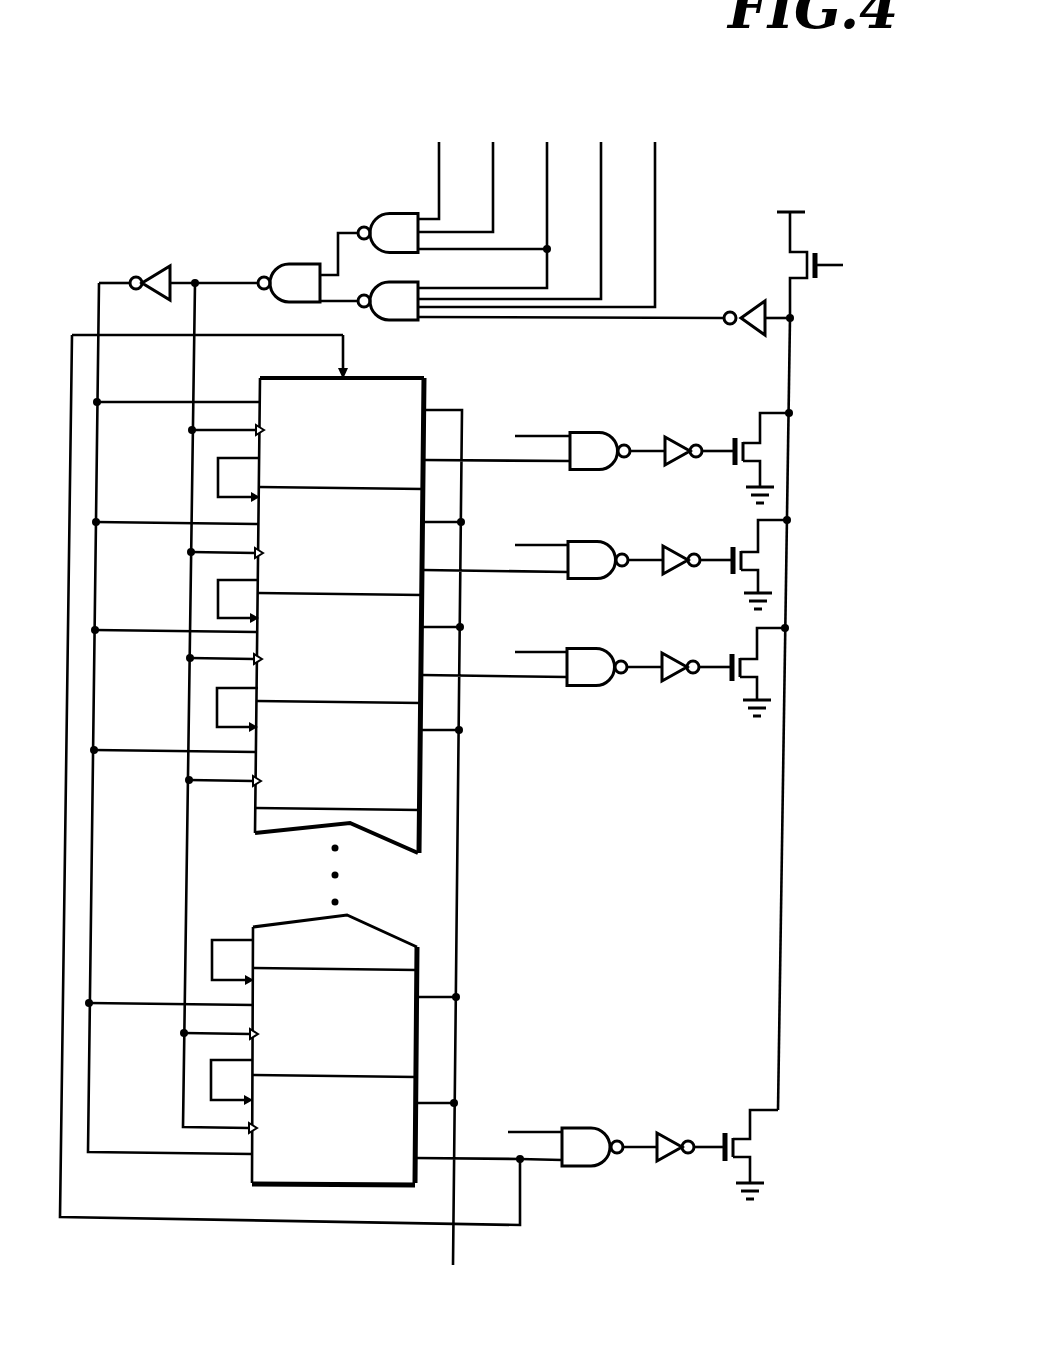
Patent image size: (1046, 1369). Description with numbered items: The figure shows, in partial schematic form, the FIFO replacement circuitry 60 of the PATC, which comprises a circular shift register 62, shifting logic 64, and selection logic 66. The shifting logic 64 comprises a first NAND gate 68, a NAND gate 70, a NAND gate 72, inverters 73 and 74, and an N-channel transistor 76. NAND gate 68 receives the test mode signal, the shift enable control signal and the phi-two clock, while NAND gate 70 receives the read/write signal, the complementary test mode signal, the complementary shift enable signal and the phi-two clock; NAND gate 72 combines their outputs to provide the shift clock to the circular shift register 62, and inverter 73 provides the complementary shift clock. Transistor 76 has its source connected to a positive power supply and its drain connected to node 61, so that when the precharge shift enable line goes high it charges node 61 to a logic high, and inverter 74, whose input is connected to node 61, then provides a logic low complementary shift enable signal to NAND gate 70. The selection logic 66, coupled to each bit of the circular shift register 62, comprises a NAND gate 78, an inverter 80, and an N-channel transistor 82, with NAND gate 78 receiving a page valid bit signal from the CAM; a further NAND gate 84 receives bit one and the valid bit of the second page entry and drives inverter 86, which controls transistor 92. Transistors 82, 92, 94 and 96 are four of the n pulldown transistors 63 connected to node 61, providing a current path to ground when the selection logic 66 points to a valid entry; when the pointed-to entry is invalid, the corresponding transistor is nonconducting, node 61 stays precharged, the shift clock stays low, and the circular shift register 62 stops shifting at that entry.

The FIFO replacement circuitry 60 is at (788, 103).
The node 61 is at (795, 320).
The circular shift register 62 is at (77, 1243).
The pulldown transistors 63 is at (838, 447).
The shifting logic 64 is at (308, 163).
The selection logic 66 is at (698, 385).
The first NAND gate 68 is at (376, 214).
The NAND gate 70 is at (374, 322).
The NAND gate 72 is at (275, 265).
The inverter 73 is at (150, 267).
The inverter 74 is at (745, 306).
The N-channel transistor 76 is at (787, 265).
The NAND gate 78 is at (598, 432).
The inverter 80 is at (677, 436).
The N-channel transistor 82 is at (748, 438).
The NAND gate 84 is at (598, 540).
The inverter 86 is at (680, 546).
The transistor 92 is at (746, 547).
The transistor 94 is at (745, 655).
The transistor 96 is at (735, 1135).